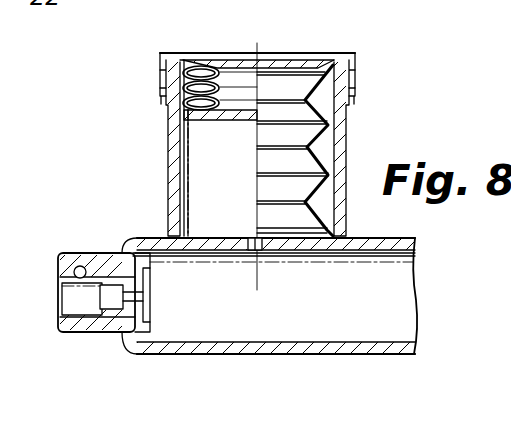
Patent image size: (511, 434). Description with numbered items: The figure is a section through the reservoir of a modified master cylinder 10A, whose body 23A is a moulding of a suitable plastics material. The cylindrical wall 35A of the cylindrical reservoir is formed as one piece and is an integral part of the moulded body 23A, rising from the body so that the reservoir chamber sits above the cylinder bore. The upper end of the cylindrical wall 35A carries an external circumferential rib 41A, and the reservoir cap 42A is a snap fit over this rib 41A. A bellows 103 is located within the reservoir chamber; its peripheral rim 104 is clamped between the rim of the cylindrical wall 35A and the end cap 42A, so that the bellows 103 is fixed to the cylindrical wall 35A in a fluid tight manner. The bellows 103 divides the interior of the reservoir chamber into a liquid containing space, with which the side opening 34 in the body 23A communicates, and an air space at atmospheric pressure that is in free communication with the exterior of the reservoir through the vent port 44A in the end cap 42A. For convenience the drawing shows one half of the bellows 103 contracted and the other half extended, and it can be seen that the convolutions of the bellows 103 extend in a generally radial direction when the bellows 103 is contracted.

The master cylinder 10A is at (142, 230).
The body 23A is at (393, 243).
The side opening 34 is at (262, 250).
The cylindrical wall 35A is at (346, 202).
The external circumferential rib 41A is at (162, 72).
The reservoir cap 42A is at (277, 62).
The vent port 44A is at (257, 62).
The bellows 103 is at (180, 108).
The peripheral rim 104 is at (342, 62).